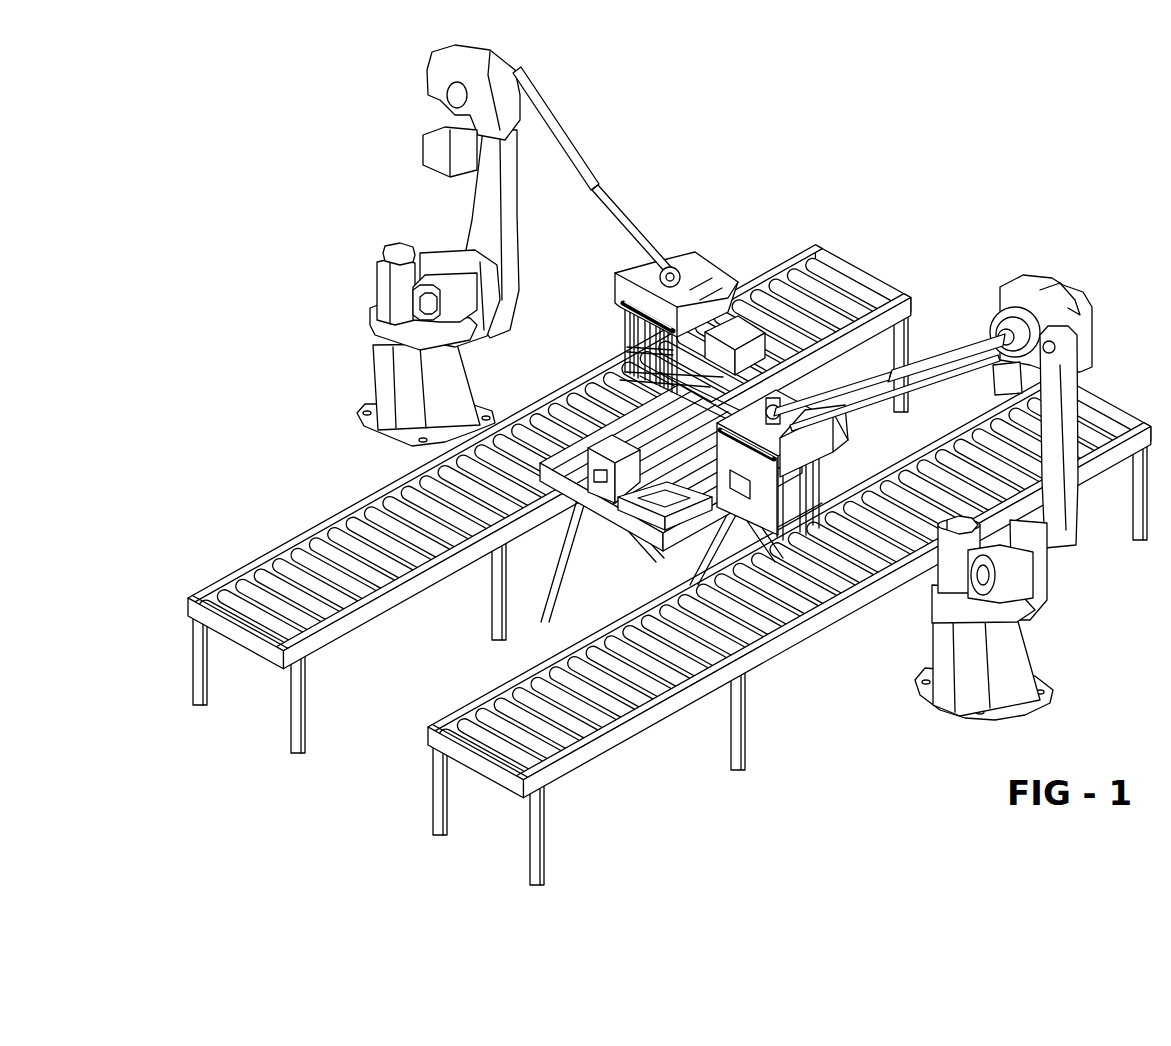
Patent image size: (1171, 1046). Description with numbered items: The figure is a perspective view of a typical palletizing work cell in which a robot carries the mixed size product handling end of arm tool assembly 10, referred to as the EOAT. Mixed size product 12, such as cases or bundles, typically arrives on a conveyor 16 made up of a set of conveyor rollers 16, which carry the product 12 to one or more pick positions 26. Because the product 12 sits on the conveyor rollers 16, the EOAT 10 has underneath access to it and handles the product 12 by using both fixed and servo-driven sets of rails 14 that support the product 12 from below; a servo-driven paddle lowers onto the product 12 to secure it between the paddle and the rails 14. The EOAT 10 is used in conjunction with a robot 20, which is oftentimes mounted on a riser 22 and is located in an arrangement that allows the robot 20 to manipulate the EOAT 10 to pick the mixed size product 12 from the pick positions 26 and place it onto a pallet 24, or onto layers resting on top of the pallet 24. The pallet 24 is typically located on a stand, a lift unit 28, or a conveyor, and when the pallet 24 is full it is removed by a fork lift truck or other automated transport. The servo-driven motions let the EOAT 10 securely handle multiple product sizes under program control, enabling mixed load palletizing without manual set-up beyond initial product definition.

The end of arm tool assembly 10 is at (712, 264).
The product 12 is at (752, 330).
The rails 14 is at (613, 300).
The conveyor rollers 16 is at (357, 615).
The robot 20 is at (375, 278).
The riser 22 is at (375, 392).
The pallet 24 is at (573, 482).
The pick positions 26 is at (613, 332).
The lift unit 28 is at (541, 608).